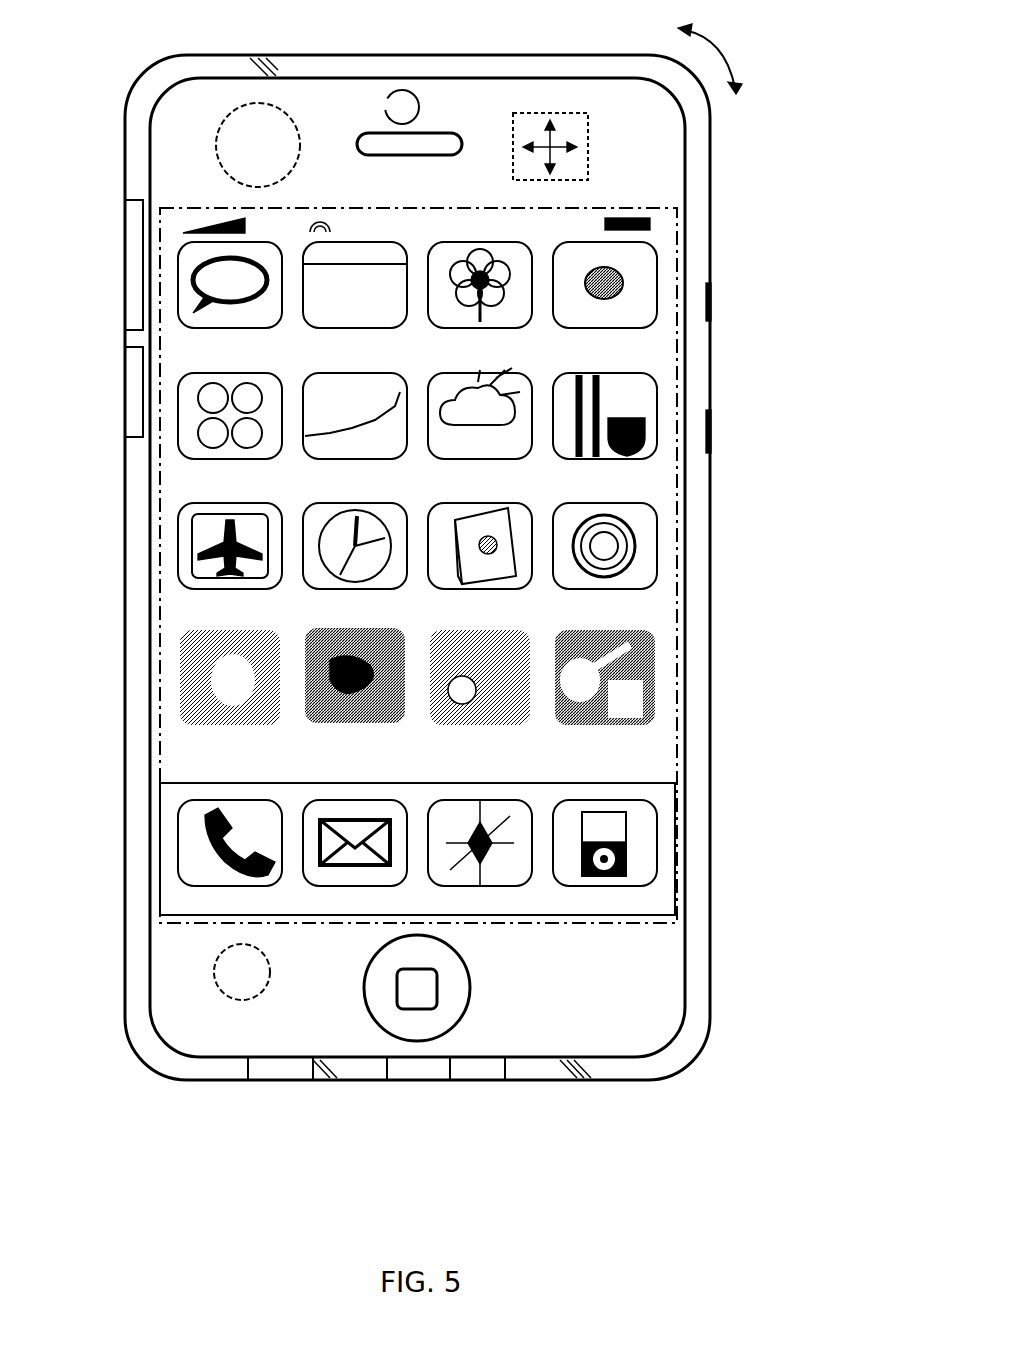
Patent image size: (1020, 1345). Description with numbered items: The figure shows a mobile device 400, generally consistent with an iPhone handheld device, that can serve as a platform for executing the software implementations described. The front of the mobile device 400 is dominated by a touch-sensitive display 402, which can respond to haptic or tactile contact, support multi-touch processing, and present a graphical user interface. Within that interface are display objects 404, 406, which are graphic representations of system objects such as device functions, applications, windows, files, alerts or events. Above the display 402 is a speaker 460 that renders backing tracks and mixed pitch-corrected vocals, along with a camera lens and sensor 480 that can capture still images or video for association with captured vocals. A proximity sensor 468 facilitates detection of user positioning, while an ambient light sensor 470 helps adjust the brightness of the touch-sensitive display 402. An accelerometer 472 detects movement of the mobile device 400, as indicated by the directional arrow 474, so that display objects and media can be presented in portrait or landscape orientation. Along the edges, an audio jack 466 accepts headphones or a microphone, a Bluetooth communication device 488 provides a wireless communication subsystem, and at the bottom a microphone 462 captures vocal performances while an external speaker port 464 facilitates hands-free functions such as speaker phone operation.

The mobile device 400 is at (520, 55).
The touch-sensitive display 402 is at (481, 546).
The display object 404 is at (664, 794).
The display object 406 is at (666, 249).
The speaker 460 is at (392, 156).
The microphone 462 is at (332, 1080).
The external speaker port 464 is at (590, 1080).
The audio jack 466 is at (265, 74).
The proximity sensor 468 is at (220, 170).
The ambient light sensor 470 is at (262, 994).
The accelerometer 472 is at (588, 175).
The directional arrow 474 is at (735, 90).
The camera lens and sensor 480 is at (420, 107).
The Bluetooth communication device 488 is at (126, 345).